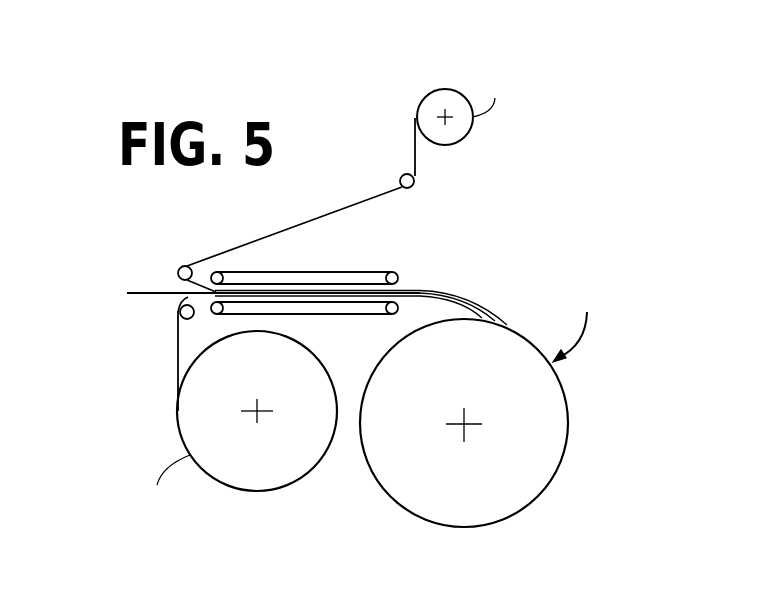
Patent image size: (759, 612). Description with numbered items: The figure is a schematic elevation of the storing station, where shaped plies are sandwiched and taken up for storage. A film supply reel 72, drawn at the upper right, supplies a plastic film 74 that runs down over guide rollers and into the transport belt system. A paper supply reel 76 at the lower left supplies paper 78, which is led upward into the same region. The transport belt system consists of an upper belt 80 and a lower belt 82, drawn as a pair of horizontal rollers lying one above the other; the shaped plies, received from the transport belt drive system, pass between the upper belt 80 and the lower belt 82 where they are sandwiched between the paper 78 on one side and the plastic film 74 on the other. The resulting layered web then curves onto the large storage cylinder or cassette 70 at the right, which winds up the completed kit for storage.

The storage cylinder or cassette 70 is at (548, 460).
The film supply reel 72 is at (448, 89).
The plastic film 74 is at (257, 238).
The paper supply reel 76 is at (325, 453).
The paper 78 is at (175, 367).
The upper belt 80 is at (342, 272).
The lower belt 82 is at (372, 318).